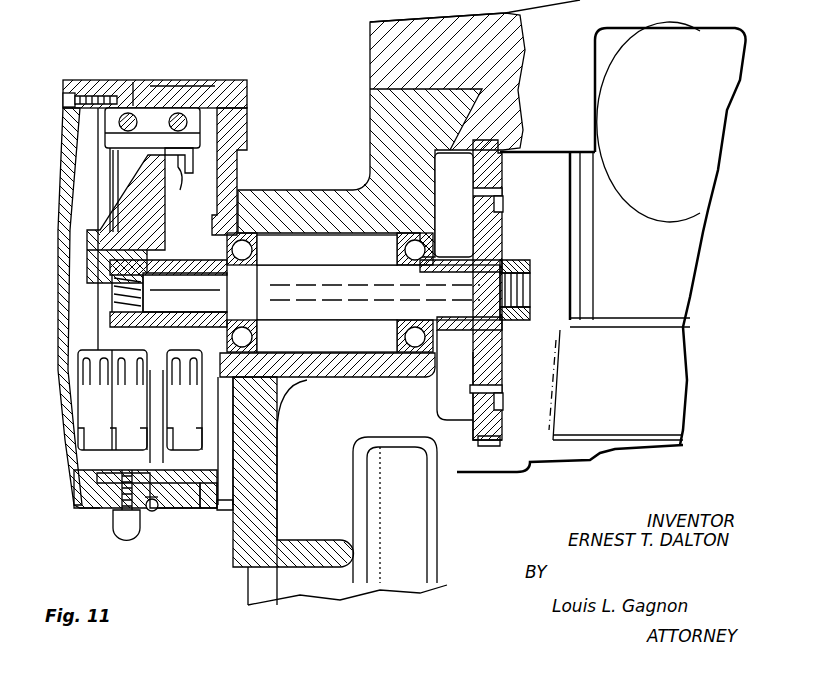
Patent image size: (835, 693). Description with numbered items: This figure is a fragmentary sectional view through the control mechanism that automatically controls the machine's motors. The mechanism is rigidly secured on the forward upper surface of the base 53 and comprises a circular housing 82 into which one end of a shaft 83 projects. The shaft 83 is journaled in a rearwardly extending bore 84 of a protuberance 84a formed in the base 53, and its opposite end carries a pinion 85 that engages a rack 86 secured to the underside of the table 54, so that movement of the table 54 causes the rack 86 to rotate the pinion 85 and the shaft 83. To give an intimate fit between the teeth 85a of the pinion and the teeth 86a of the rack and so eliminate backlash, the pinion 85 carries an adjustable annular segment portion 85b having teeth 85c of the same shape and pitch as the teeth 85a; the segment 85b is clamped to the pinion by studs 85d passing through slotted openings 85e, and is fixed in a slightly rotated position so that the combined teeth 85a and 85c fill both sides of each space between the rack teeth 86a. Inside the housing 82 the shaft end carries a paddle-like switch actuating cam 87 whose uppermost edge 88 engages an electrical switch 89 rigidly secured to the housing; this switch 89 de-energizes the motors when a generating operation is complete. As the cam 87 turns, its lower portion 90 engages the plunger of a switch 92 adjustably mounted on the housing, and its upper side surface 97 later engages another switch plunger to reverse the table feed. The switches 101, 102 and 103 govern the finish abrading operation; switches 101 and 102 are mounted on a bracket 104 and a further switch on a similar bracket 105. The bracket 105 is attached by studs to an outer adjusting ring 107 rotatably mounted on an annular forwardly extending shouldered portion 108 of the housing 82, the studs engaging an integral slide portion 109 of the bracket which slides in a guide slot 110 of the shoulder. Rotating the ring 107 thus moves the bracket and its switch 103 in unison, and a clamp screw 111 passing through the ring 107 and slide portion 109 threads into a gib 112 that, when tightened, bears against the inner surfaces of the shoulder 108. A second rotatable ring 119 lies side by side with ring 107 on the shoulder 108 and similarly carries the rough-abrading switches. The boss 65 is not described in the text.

The base 53 is at (272, 520).
The table 54 is at (380, 35).
The boss 65 is at (457, 125).
The circular housing 82 is at (233, 90).
The shaft 83 is at (318, 315).
The bore 84 is at (368, 350).
The protuberance 84a is at (332, 372).
The pinion 85 is at (493, 350).
The teeth 85a is at (497, 423).
The adjustable annular segment portion 85b is at (473, 376).
The teeth 85c is at (492, 422).
The studs 85d is at (502, 192).
The slotted openings 85e is at (503, 205).
The rack 86 is at (503, 153).
The teeth 86a is at (473, 157).
The switch actuating cam 87 is at (92, 217).
The uppermost edge 88 is at (187, 153).
The electrical switch 89 is at (160, 138).
The lower portion 90 is at (97, 272).
The electrical switch 92 is at (120, 238).
The upper side surface 97 is at (178, 167).
The switch 101 is at (88, 403).
The switch 102 is at (130, 368).
The switch 103 is at (195, 430).
The bracket 104 is at (150, 370).
The bracket 105 is at (182, 510).
The adjusting ring 107 is at (115, 80).
The shouldered portion 108 is at (140, 95).
The slide portion 109 is at (76, 508).
The guide slot 110 is at (117, 160).
The clamp screw 111 is at (120, 535).
The gib 112 is at (100, 478).
The second rotatable ring 119 is at (177, 80).